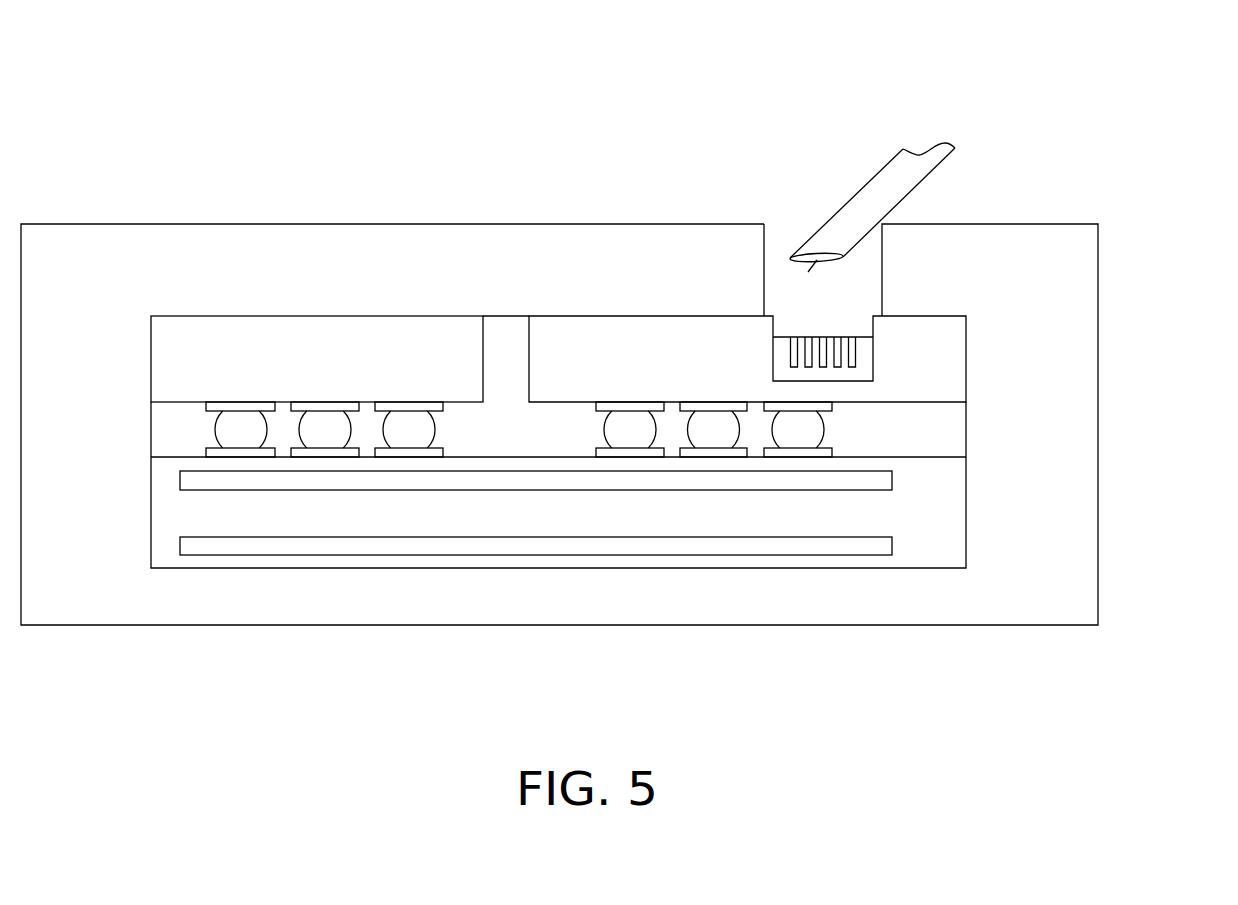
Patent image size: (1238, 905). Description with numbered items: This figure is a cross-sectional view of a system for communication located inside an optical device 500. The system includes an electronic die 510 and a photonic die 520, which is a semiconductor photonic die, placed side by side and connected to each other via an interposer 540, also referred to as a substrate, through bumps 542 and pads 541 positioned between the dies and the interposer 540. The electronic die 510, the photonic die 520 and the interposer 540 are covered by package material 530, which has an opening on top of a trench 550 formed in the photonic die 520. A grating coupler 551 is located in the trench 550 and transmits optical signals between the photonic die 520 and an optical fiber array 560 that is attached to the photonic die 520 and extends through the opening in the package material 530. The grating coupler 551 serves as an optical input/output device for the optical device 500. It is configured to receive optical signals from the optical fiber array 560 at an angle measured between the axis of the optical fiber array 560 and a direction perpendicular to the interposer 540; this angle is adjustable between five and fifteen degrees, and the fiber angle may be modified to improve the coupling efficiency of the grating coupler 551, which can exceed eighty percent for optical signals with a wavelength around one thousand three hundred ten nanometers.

The optical device 500 is at (619, 377).
The electronic die 510 is at (302, 328).
The photonic die 520 is at (630, 332).
The package material 530 is at (1070, 428).
The interposer 540 is at (505, 513).
The pads 541 is at (445, 407).
The bumps 542 is at (832, 407).
The trench 550 is at (810, 254).
The grating coupler 551 is at (814, 345).
The optical fiber array 560 is at (882, 165).